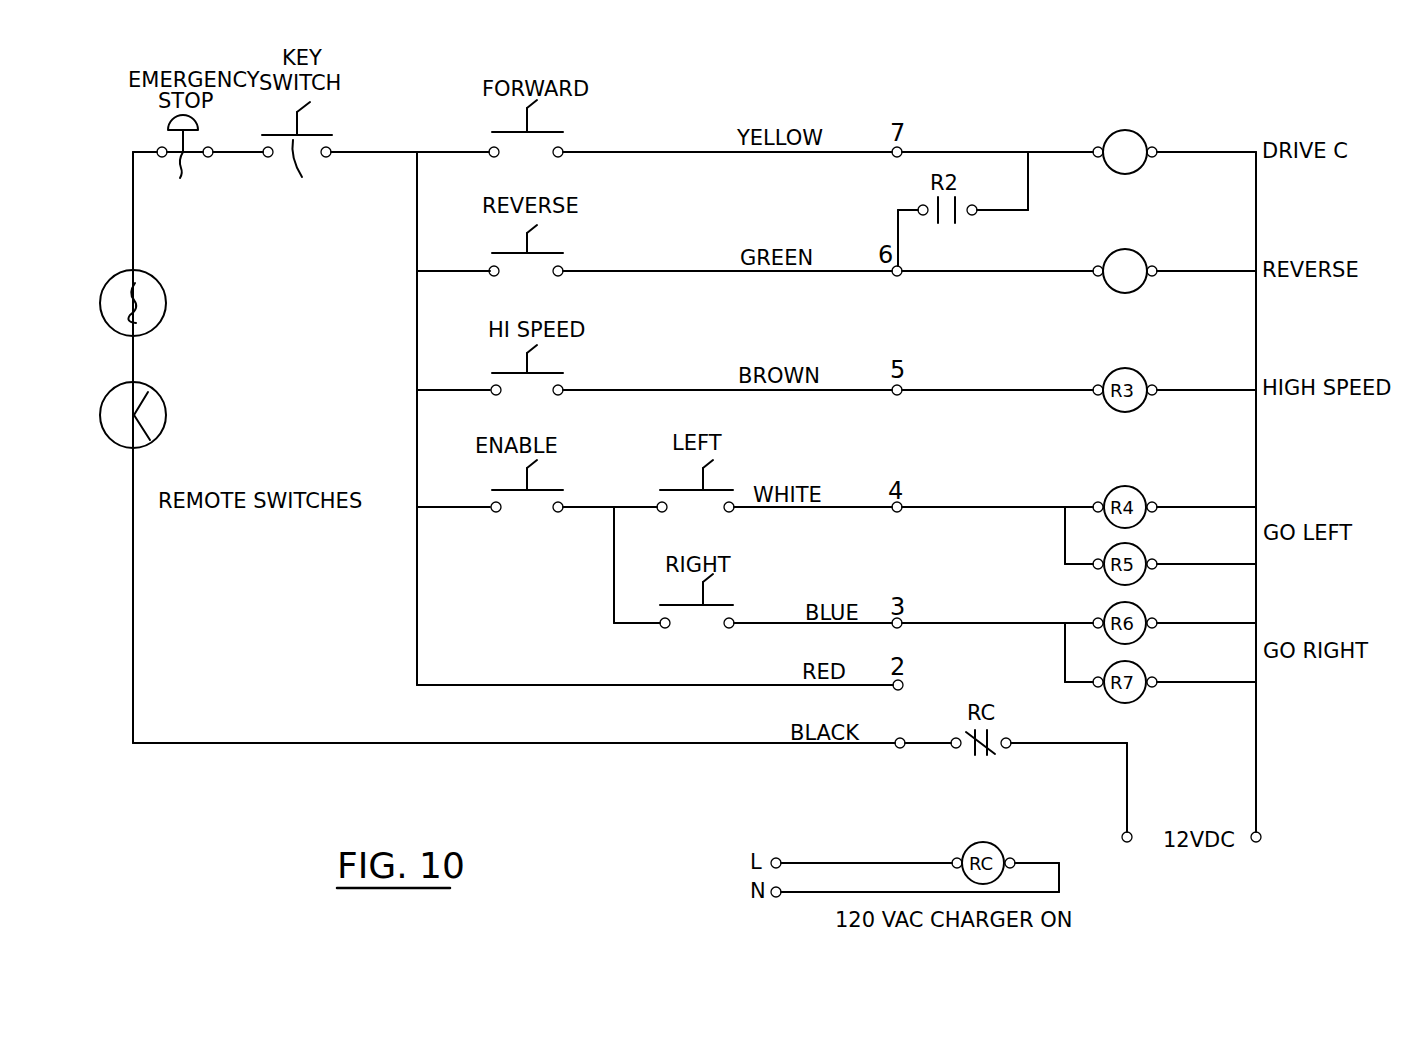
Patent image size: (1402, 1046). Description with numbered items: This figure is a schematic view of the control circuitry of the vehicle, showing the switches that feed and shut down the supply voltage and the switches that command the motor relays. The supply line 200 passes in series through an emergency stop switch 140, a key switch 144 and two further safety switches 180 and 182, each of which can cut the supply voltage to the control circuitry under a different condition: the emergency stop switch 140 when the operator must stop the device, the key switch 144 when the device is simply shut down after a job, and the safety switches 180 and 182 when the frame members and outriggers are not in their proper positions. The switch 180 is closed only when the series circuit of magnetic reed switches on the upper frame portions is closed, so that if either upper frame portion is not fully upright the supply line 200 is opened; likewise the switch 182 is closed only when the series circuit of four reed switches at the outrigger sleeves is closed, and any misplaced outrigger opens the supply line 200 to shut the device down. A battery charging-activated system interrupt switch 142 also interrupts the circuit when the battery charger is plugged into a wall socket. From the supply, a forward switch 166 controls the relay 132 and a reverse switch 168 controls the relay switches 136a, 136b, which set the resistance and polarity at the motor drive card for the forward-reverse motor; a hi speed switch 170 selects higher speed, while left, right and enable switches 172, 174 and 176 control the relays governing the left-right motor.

The emergency stop switch 140 is at (185, 164).
The key switch 144 is at (297, 157).
The forward switch 166 is at (553, 132).
The reverse switch 168 is at (553, 253).
The hi speed switch 170 is at (555, 373).
The left switch 172 is at (723, 490).
The right switch 174 is at (723, 605).
The enable switch 176 is at (553, 490).
The safety switch 180 is at (166, 306).
The safety switch 182 is at (166, 408).
The supply line 200 is at (134, 607).
The relay 132 is at (1140, 126).
The relay switch 136a is at (1189, 244).
The relay switch 136b is at (1122, 249).
The battery charging-activated system interrupt switch 142 is at (982, 757).